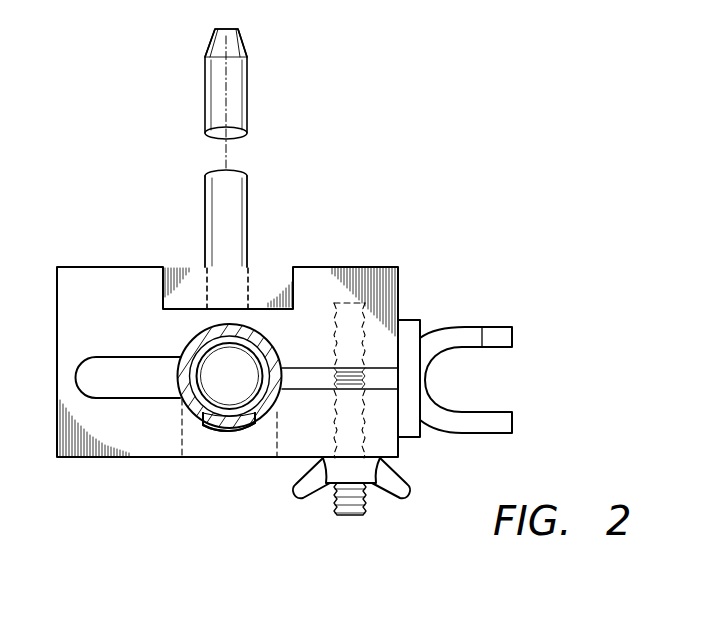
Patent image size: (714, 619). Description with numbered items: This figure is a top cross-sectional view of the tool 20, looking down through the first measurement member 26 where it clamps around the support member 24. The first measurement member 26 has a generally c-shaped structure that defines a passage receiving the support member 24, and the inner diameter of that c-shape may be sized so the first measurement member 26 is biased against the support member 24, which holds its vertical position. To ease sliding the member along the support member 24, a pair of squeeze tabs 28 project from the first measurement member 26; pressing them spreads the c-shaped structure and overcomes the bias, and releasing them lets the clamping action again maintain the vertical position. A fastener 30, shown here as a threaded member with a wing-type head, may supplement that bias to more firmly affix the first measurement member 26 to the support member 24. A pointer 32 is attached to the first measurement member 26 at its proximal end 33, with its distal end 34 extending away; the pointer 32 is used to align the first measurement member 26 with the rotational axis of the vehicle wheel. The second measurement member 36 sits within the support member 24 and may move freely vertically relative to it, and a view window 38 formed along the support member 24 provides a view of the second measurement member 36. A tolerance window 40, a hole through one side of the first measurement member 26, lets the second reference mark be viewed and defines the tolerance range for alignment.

The tool 20 is at (348, 182).
The support member 24 is at (178, 384).
The first measurement member 26 is at (103, 267).
The squeeze tabs 28 is at (474, 327).
The fastener 30 is at (398, 504).
The pointer 32 is at (205, 97).
The proximal end 33 is at (250, 280).
The distal end 34 is at (208, 45).
The second measurement member 36 is at (188, 345).
The view window 38 is at (244, 428).
The tolerance window 40 is at (183, 434).